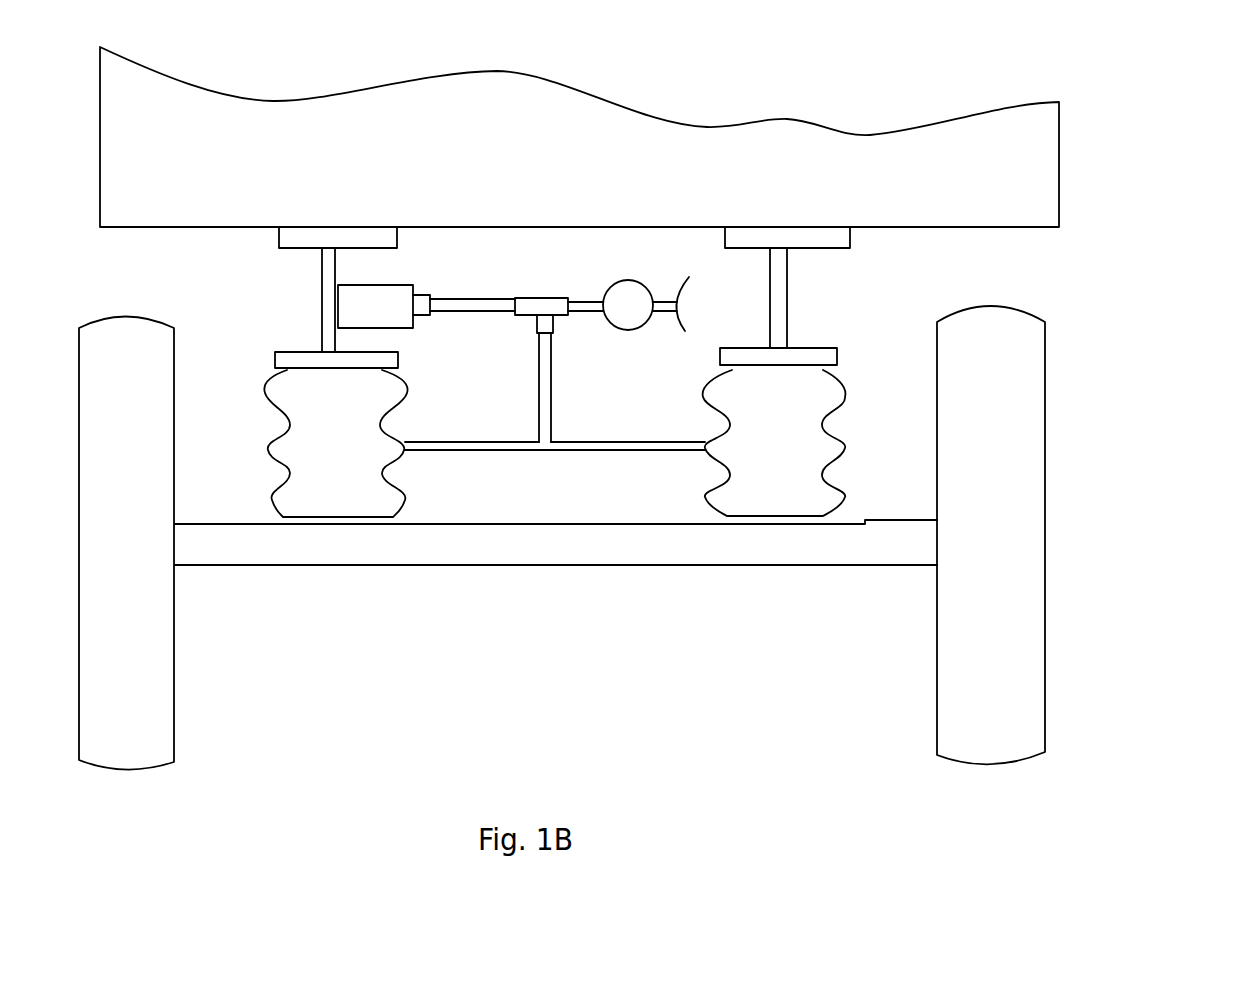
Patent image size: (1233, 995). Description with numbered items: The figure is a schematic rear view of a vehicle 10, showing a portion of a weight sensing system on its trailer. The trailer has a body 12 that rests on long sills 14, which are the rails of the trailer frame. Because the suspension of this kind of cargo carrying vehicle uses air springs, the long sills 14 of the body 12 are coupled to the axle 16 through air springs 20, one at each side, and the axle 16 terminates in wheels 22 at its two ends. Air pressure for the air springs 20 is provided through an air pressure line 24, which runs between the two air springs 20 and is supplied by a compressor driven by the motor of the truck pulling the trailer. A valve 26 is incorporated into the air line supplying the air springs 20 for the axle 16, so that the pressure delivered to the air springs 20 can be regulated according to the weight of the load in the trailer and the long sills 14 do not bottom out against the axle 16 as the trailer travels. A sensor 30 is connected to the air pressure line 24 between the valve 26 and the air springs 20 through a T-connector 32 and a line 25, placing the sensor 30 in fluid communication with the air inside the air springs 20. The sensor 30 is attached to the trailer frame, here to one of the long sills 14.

The vehicle 10 is at (1182, 146).
The body 12 is at (97, 168).
The long sills 14 is at (290, 250).
The axle 16 is at (503, 567).
The air springs 20 is at (268, 450).
The wheels 22 is at (1048, 520).
The air pressure line 24 is at (607, 452).
The line 25 is at (477, 316).
The valve 26 is at (617, 333).
The sensor 30 is at (372, 284).
The T-connector 32 is at (543, 297).